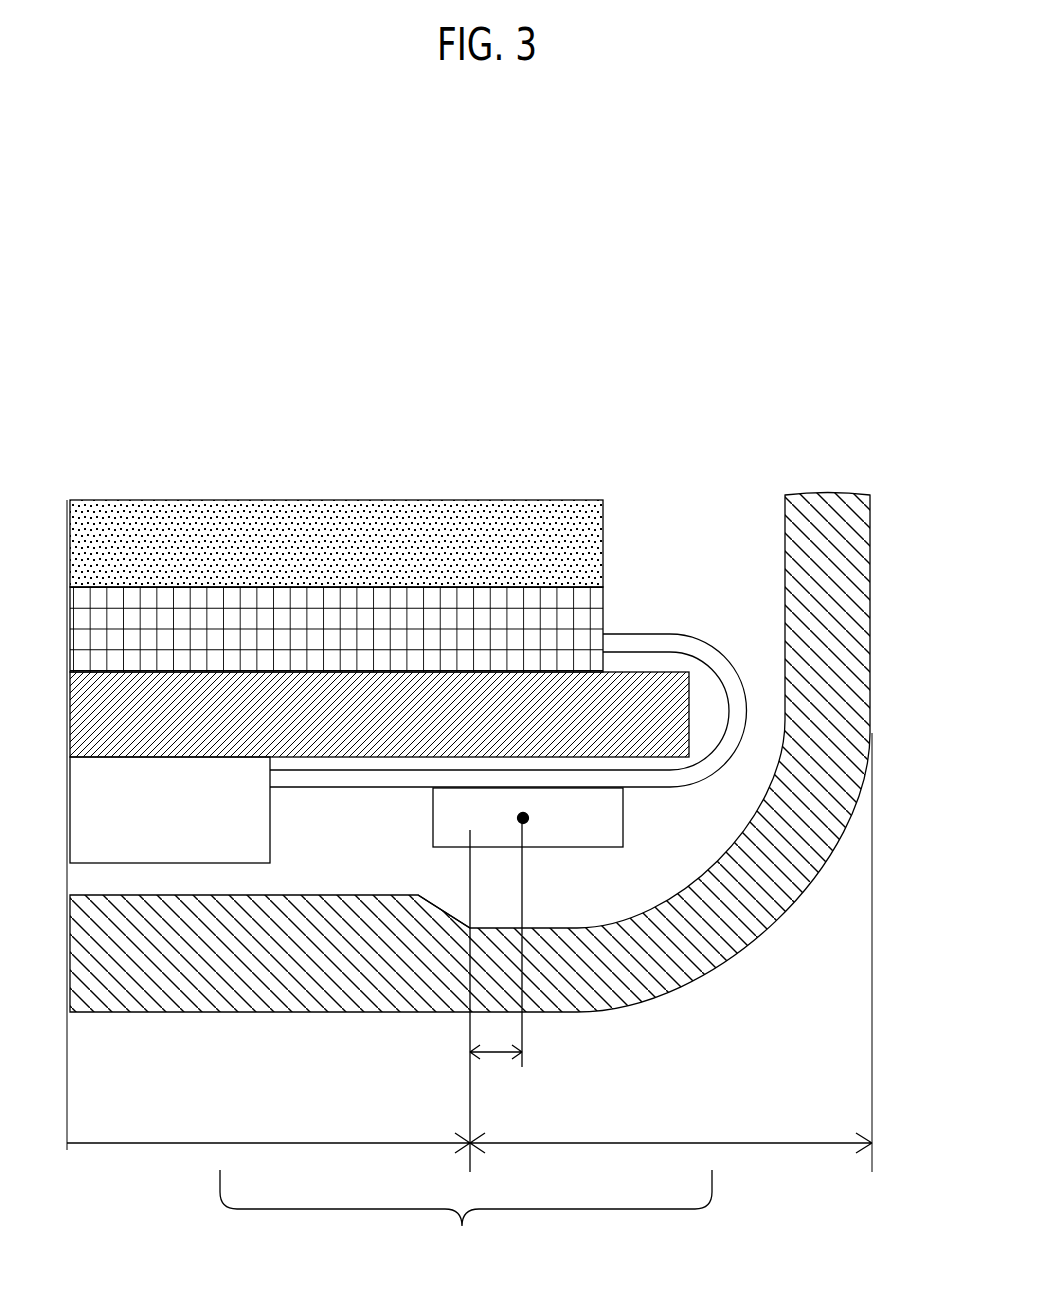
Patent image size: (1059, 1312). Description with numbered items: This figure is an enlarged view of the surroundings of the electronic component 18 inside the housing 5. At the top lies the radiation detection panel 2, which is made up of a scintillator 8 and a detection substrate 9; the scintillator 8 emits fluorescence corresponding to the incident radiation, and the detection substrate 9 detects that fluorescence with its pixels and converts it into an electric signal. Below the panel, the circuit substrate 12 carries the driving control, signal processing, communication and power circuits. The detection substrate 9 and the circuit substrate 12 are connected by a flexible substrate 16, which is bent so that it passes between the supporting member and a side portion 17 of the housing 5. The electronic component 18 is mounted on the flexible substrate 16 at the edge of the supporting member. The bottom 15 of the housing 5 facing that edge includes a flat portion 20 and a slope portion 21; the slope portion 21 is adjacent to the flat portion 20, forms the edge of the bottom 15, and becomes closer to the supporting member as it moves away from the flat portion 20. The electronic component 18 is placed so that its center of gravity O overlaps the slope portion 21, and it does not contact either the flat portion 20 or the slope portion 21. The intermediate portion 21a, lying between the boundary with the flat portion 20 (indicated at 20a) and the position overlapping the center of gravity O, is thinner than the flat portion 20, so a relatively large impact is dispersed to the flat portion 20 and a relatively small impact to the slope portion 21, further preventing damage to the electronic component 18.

The radiation detection panel 2 is at (379, 520).
The detection substrate 9 is at (322, 520).
The scintillator 8 is at (426, 625).
The flexible substrate 16 is at (667, 645).
The housing 5 is at (513, 672).
The side portion 17 is at (842, 488).
The electronic component 18 is at (613, 808).
The circuit substrate 12 is at (202, 823).
The center of gravity O is at (528, 822).
The step portion 20a is at (448, 985).
The intermediate portion 21a is at (496, 995).
The flat portion 20 is at (268, 1161).
The slope portion 21 is at (671, 1161).
The bottom 15 is at (546, 1000).